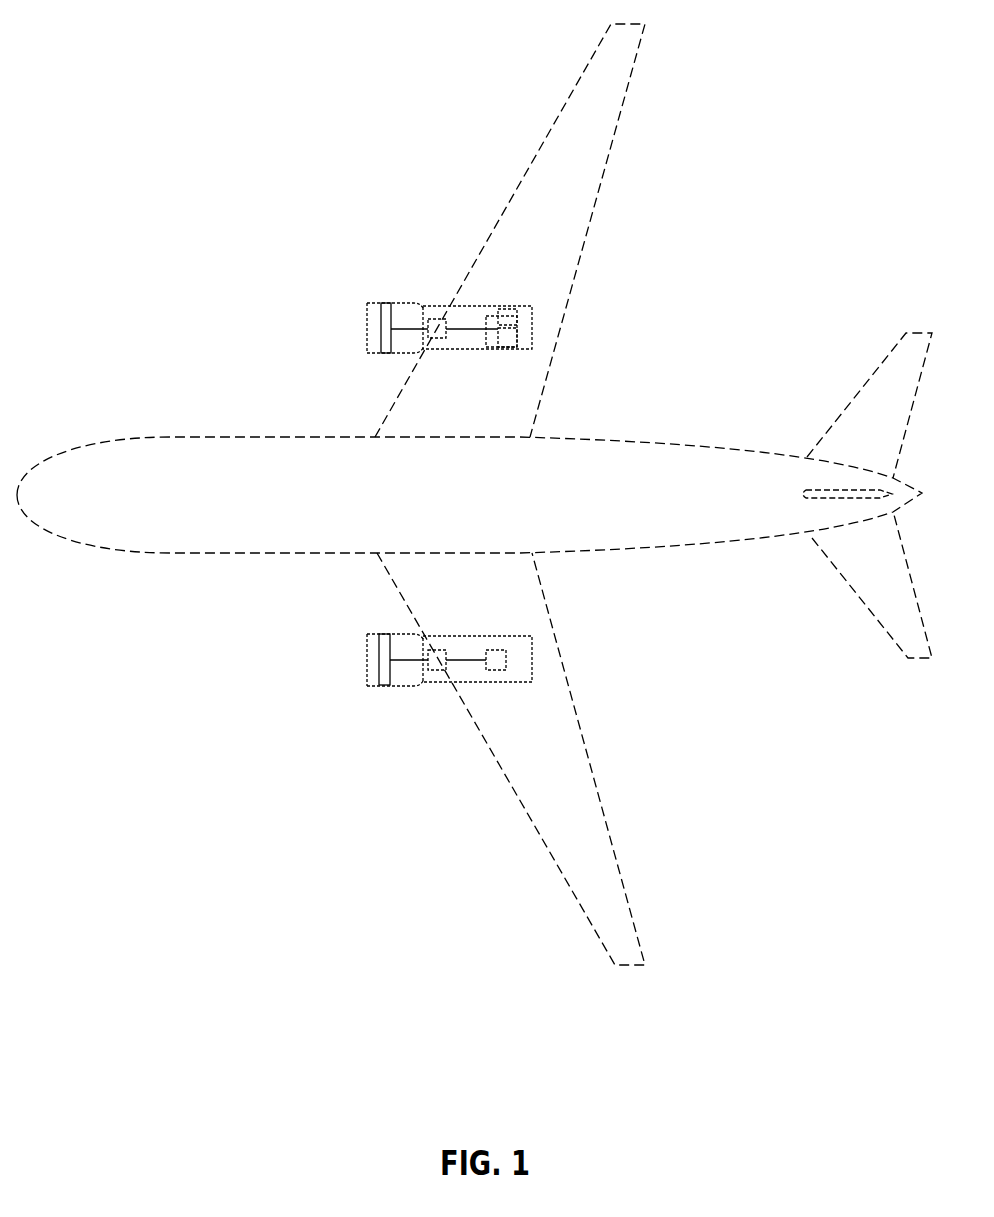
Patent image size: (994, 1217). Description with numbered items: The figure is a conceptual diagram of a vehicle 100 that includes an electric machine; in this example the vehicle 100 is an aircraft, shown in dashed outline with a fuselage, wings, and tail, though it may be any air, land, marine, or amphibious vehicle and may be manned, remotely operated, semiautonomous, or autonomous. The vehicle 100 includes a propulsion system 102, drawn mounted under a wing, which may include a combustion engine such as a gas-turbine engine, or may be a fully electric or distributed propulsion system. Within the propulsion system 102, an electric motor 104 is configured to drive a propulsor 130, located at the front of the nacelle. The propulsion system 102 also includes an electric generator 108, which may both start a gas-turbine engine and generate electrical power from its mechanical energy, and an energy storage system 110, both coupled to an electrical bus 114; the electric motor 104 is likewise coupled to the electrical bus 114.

The vehicle 100 is at (474, 494).
The propulsion system 102 is at (428, 315).
The electric motor 104 is at (432, 345).
The electric generator 108 is at (518, 338).
The energy storage system 110 is at (503, 310).
The electrical bus 114 is at (477, 330).
The propulsor 130 is at (382, 355).